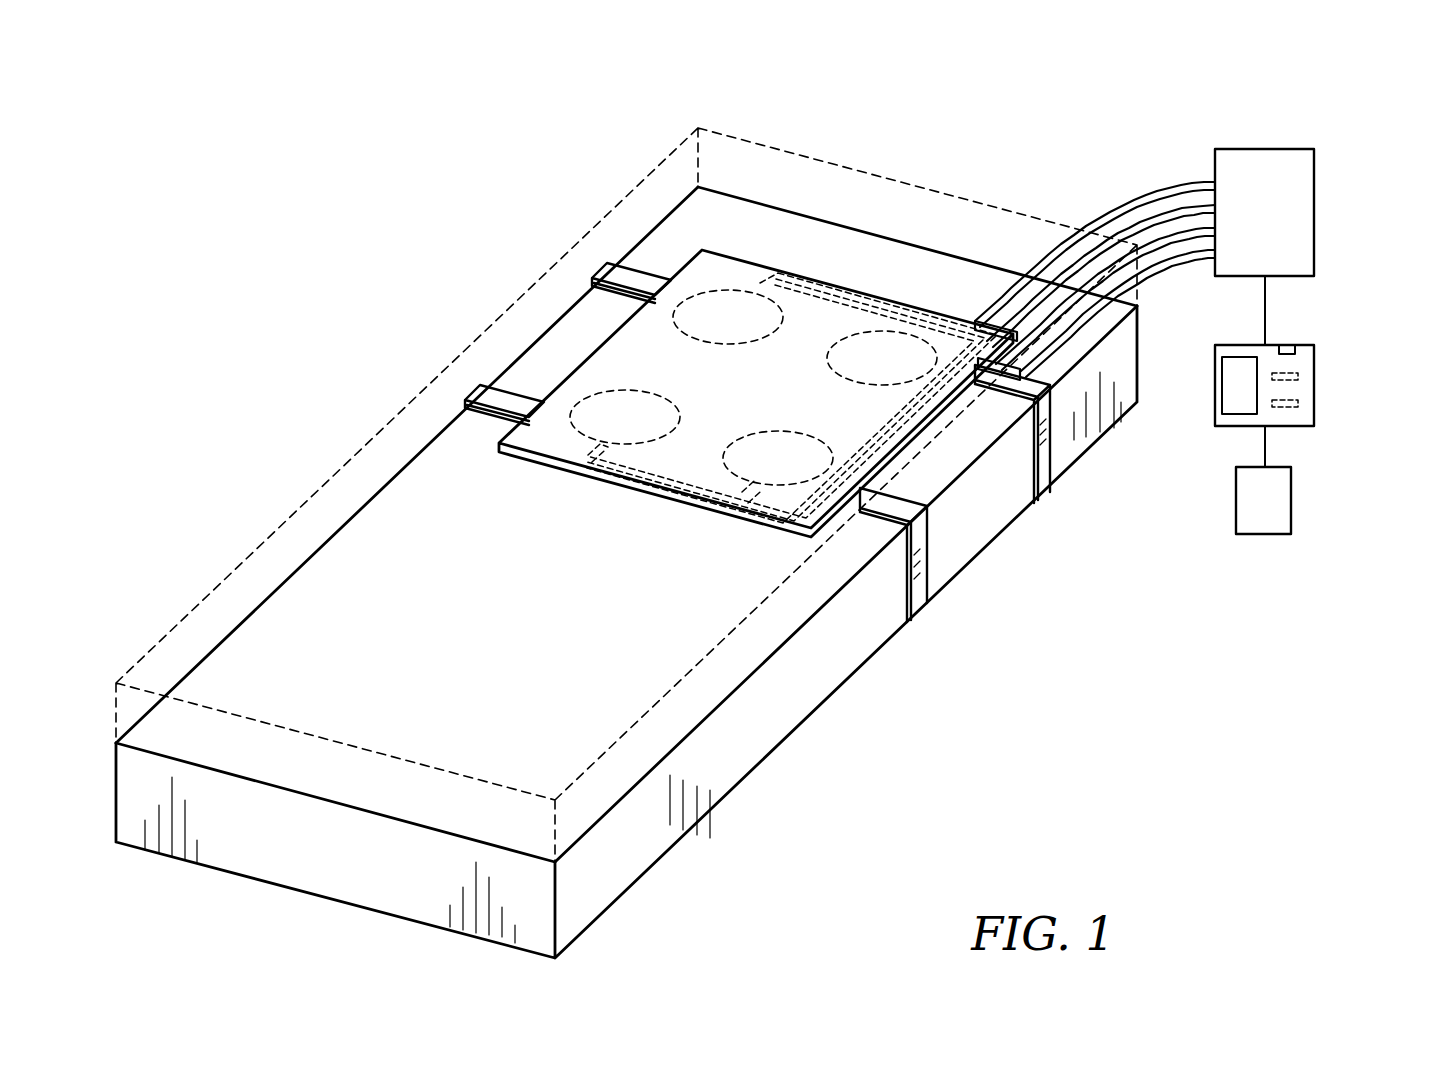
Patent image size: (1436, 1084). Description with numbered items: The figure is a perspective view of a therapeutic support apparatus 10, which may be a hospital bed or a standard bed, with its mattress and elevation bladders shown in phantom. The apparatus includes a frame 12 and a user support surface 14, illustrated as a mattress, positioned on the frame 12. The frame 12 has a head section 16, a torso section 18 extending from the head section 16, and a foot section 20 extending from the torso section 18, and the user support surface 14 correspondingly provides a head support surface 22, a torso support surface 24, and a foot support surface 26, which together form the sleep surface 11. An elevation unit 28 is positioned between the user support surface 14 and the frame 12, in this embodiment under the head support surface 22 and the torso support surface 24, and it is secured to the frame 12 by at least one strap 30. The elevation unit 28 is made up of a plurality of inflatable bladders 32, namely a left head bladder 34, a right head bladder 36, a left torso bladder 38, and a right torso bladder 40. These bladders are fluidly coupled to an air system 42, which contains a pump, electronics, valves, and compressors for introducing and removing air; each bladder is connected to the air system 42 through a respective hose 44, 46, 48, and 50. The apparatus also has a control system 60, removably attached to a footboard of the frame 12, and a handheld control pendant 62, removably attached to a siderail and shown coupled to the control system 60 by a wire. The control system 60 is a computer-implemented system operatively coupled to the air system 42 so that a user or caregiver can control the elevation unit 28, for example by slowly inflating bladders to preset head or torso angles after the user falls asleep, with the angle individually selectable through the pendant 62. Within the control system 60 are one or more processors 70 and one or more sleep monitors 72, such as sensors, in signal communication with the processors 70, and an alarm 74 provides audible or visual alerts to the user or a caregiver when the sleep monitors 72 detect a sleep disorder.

The therapeutic support apparatus 10 is at (808, 88).
The sleep surface 11 is at (405, 518).
The frame 12 is at (1130, 398).
The user support surface 14 is at (642, 668).
The head section 16 is at (1066, 428).
The torso section 18 is at (940, 545).
The foot section 20 is at (648, 845).
The head support surface 22 is at (648, 256).
The torso support surface 24 is at (522, 383).
The foot support surface 26 is at (290, 628).
The elevation unit 28 is at (748, 278).
The strap 30 is at (745, 398).
The inflatable bladders 32 is at (753, 345).
The left head bladder 34 is at (718, 296).
The right head bladder 36 is at (862, 373).
The left torso bladder 38 is at (637, 392).
The right torso bladder 40 is at (790, 440).
The air system 42 is at (1303, 216).
The hose 44 is at (1048, 257).
The hose 46 is at (1087, 238).
The hose 48 is at (1120, 278).
The hose 50 is at (1157, 230).
The control system 60 is at (1300, 360).
The handheld control pendant 62 is at (1290, 495).
The processors 70 is at (1300, 378).
The sleep monitors 72 is at (1300, 406).
The alarm 74 is at (1290, 350).